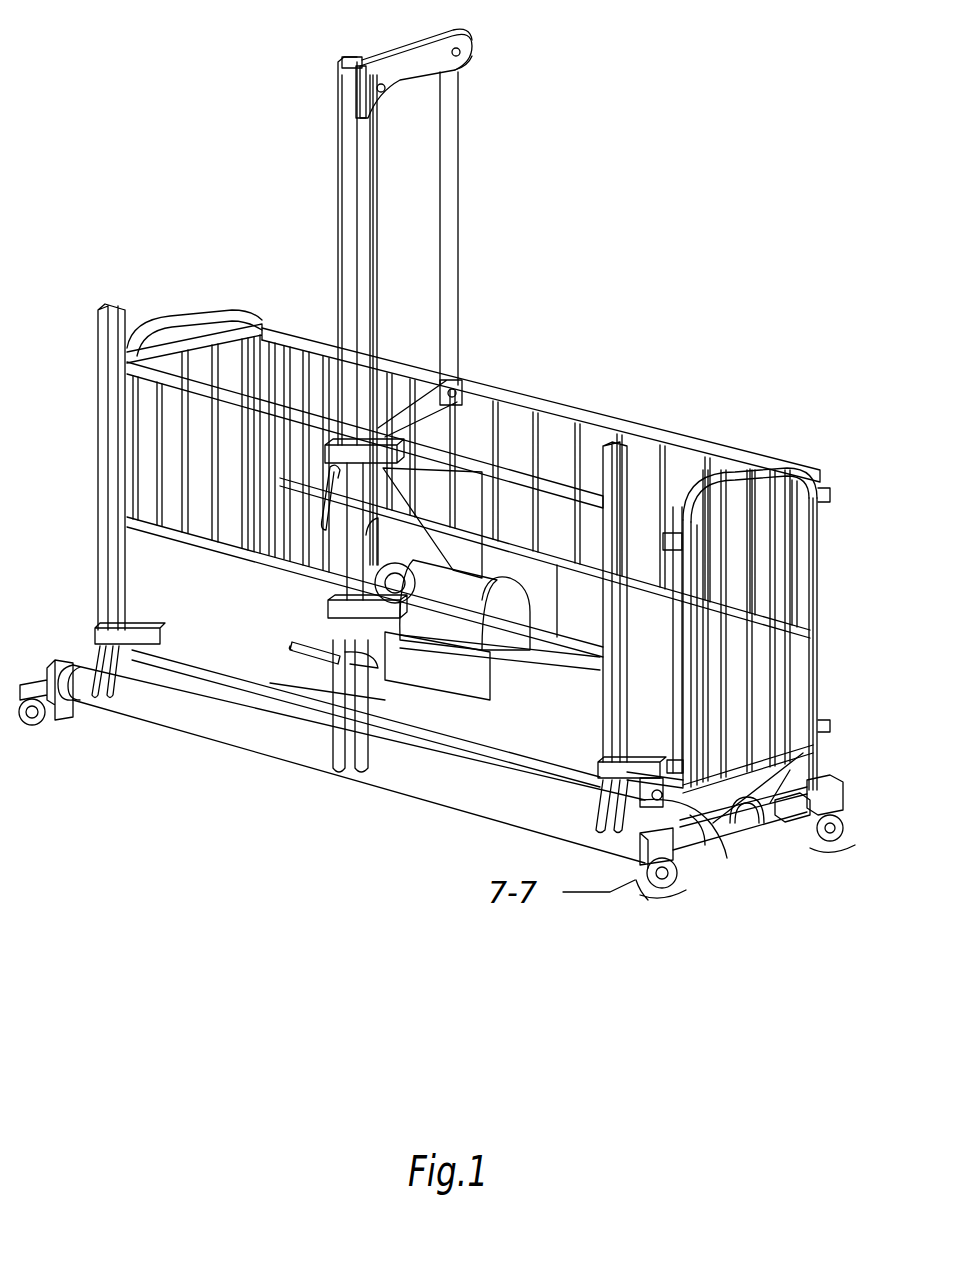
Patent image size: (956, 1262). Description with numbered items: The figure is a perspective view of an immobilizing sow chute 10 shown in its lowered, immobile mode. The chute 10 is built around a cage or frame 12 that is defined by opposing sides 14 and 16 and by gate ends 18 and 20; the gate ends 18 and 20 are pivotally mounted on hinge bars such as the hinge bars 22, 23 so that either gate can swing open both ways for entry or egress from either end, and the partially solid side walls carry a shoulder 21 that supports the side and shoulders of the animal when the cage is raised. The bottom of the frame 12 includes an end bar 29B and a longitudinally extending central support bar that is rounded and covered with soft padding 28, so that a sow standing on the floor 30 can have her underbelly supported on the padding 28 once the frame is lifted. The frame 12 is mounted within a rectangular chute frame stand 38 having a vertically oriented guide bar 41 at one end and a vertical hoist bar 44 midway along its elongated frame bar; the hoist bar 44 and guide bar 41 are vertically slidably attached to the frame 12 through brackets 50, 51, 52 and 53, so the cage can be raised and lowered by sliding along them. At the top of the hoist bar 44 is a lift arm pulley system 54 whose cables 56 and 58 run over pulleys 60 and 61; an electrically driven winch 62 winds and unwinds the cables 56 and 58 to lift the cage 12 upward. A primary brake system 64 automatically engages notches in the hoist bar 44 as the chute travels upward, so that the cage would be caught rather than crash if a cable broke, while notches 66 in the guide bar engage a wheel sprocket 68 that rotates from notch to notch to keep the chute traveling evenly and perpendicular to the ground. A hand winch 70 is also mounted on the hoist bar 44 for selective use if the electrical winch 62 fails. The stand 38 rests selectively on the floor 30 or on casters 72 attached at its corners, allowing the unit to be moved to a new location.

The immobilizing chute 10 is at (597, 128).
The cage or frame 12 is at (606, 396).
The side 14 is at (518, 470).
The side 16 is at (690, 438).
The gate end 18 is at (196, 328).
The gate end 20 is at (790, 462).
The shoulder 21 is at (787, 773).
The hinge bar 22 is at (612, 690).
The hinge bar 23 is at (826, 540).
The soft padding 28 is at (717, 812).
The end bar 29B is at (788, 822).
The floor 30 is at (830, 780).
The chute frame stand 38 is at (258, 752).
The vertical guide bar 41 is at (603, 712).
The vertical hoist bar 44 is at (343, 165).
The bracket 50 is at (397, 474).
The bracket 51 is at (138, 632).
The bracket 52 is at (612, 752).
The bracket 53 is at (335, 612).
The lift arm pulley system 54 is at (400, 50).
The winch cable 56 is at (463, 226).
The lift cable 58 is at (373, 527).
The pulley 60 is at (468, 42).
The pulley 61 is at (357, 84).
The electrically driven winch 62 is at (502, 630).
The primary brake system 64 is at (308, 560).
The notches 66 is at (103, 362).
The wheel sprocket 68 is at (140, 652).
The hand winch 70 is at (345, 660).
The caster 72 is at (47, 727).